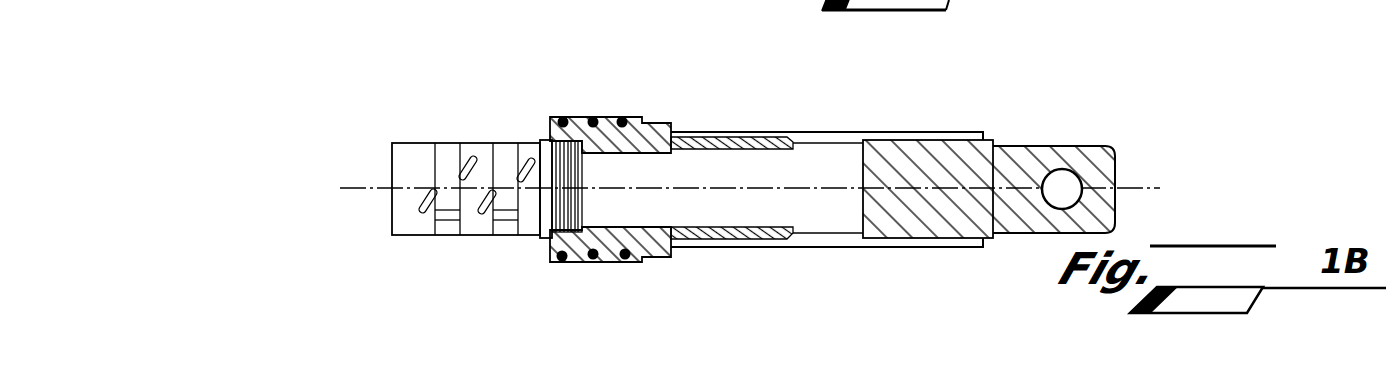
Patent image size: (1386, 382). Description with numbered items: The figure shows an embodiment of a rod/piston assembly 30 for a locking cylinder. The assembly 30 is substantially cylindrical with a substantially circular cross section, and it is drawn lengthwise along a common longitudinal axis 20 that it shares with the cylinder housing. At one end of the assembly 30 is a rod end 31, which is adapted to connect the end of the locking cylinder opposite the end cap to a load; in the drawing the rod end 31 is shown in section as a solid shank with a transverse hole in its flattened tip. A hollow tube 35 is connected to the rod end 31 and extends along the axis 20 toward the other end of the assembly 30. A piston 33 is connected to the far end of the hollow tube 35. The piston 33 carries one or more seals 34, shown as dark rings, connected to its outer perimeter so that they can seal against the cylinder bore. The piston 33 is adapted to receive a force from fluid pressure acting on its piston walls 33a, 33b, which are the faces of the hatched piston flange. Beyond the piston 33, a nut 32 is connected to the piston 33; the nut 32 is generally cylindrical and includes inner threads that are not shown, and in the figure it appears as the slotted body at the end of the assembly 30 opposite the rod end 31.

The rod/piston assembly 30 is at (354, 86).
The longitudinal axis 20 is at (353, 187).
The rod end 31 is at (1107, 146).
The nut 32 is at (470, 237).
The piston 33 is at (668, 122).
The piston wall 33a is at (548, 127).
The piston wall 33b is at (677, 123).
The seals 34 is at (622, 121).
The hollow tube 35 is at (818, 130).